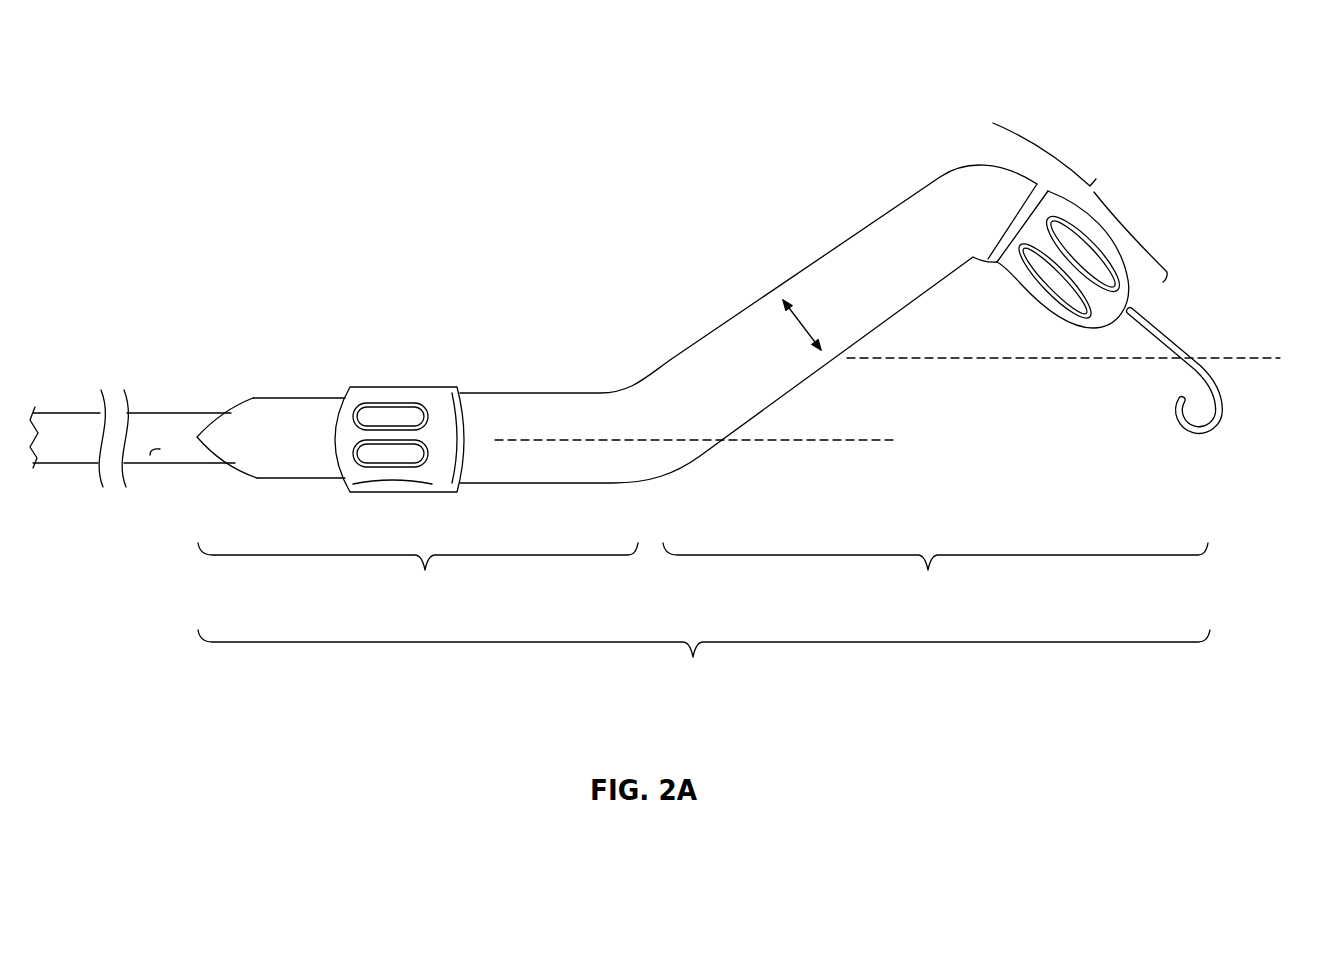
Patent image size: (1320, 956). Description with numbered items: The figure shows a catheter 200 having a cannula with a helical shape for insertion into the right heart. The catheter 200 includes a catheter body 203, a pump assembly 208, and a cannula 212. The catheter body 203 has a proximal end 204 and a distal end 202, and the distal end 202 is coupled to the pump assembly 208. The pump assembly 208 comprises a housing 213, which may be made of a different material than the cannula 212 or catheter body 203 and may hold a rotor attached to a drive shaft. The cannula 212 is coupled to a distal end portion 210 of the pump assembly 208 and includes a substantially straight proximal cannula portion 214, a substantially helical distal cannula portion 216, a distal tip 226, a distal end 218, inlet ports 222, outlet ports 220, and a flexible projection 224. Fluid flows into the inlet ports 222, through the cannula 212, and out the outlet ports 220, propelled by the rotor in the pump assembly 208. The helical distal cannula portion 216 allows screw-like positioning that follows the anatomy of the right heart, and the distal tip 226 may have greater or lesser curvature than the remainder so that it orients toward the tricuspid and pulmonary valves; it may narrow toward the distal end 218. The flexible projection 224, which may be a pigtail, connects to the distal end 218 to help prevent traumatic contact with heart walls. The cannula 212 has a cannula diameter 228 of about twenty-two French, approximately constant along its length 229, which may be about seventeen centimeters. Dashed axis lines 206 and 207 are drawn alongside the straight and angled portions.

The catheter 200 is at (278, 100).
The distal end 202 is at (178, 412).
The catheter body 203 is at (160, 452).
The proximal end 204 is at (75, 413).
The first longitudinal axis 206 is at (818, 441).
The second longitudinal axis 207 is at (1270, 357).
The pump assembly 208 is at (253, 398).
The distal end portion 210 is at (399, 384).
The cannula 212 is at (883, 228).
The housing 213 is at (270, 422).
The proximal cannula portion 214 is at (418, 576).
The distal cannula portion 216 is at (935, 577).
The distal end 218 is at (1120, 262).
The outlet ports 220 is at (1052, 288).
The inlet ports 222 is at (390, 415).
The flexible projection 224 is at (1197, 374).
The distal tip 226 is at (1080, 202).
The cannula diameter 228 is at (802, 326).
The length 229 is at (704, 664).